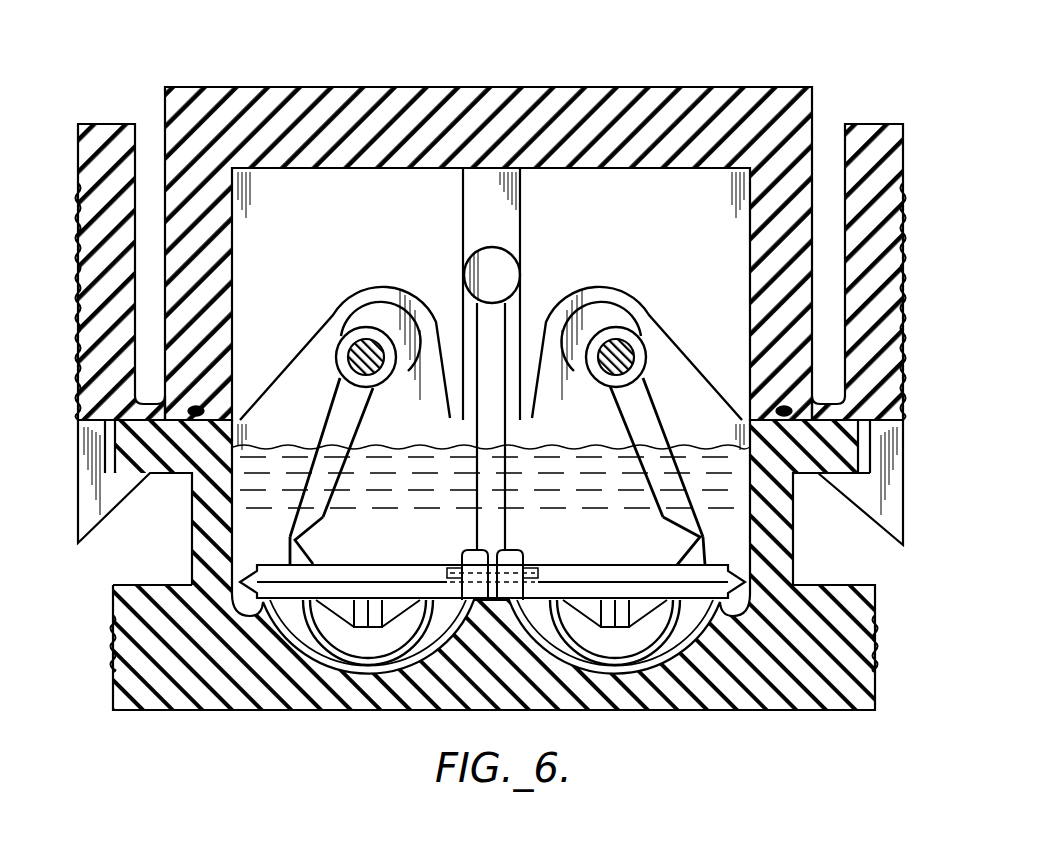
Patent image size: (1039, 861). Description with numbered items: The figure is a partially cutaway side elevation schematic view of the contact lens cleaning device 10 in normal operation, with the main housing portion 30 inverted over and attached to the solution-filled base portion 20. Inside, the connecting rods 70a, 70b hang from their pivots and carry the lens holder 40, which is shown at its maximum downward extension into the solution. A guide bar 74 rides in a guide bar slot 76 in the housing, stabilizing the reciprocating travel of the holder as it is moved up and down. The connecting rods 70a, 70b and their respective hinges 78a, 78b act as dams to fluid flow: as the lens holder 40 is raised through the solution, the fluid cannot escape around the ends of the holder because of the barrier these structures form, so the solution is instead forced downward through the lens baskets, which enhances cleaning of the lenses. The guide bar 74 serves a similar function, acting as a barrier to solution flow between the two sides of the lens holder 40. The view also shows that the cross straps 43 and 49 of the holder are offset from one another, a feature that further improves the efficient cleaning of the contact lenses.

The contact lens cleaning device 10 is at (930, 283).
The base portion 20 is at (878, 588).
The main housing portion 30 is at (835, 73).
The lens holder 40 is at (256, 562).
The cross strap 43 is at (414, 600).
The cross strap 49 is at (370, 602).
The connecting rod 70a is at (330, 473).
The connecting rod 70b is at (660, 480).
The guide bar 74 is at (510, 318).
The guide bar slot 76 is at (500, 198).
The hinge 78a is at (300, 556).
The hinge 78b is at (688, 543).